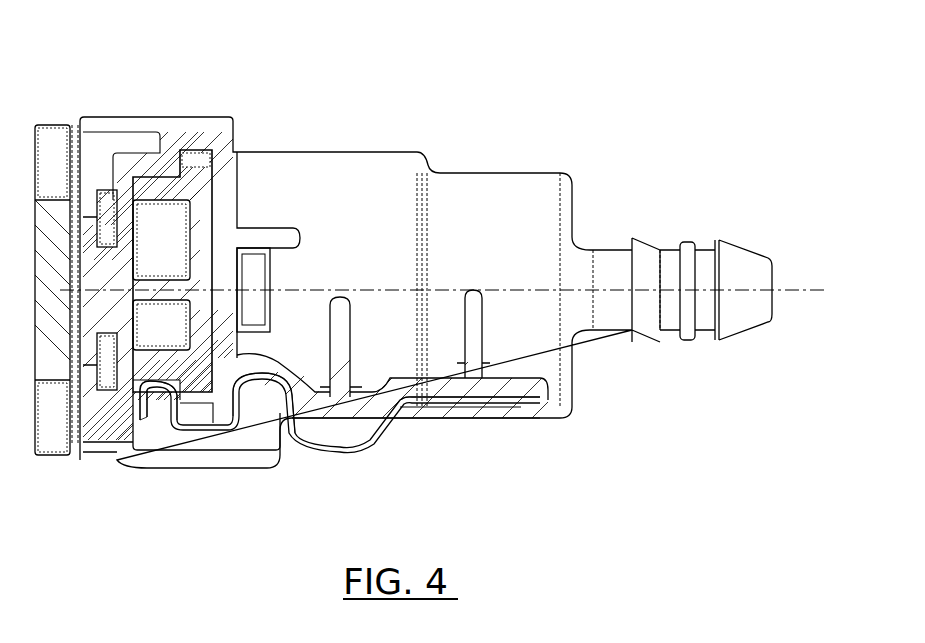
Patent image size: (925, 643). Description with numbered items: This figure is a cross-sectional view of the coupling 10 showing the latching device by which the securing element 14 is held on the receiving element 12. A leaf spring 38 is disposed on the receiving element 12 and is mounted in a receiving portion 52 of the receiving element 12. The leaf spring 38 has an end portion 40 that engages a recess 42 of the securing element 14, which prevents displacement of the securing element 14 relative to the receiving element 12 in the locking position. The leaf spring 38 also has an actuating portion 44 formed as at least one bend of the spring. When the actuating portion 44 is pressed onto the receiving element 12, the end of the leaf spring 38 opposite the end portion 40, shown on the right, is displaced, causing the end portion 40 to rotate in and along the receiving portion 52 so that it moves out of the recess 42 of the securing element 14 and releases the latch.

The coupling 10 is at (117, 72).
The receiving element 12 is at (555, 388).
The securing element 14 is at (190, 190).
The leaf spring 38 is at (393, 417).
The end portion 40 is at (162, 395).
The recess 42 is at (137, 395).
The actuating portion 44 is at (323, 447).
The receiving portion 52 is at (262, 405).